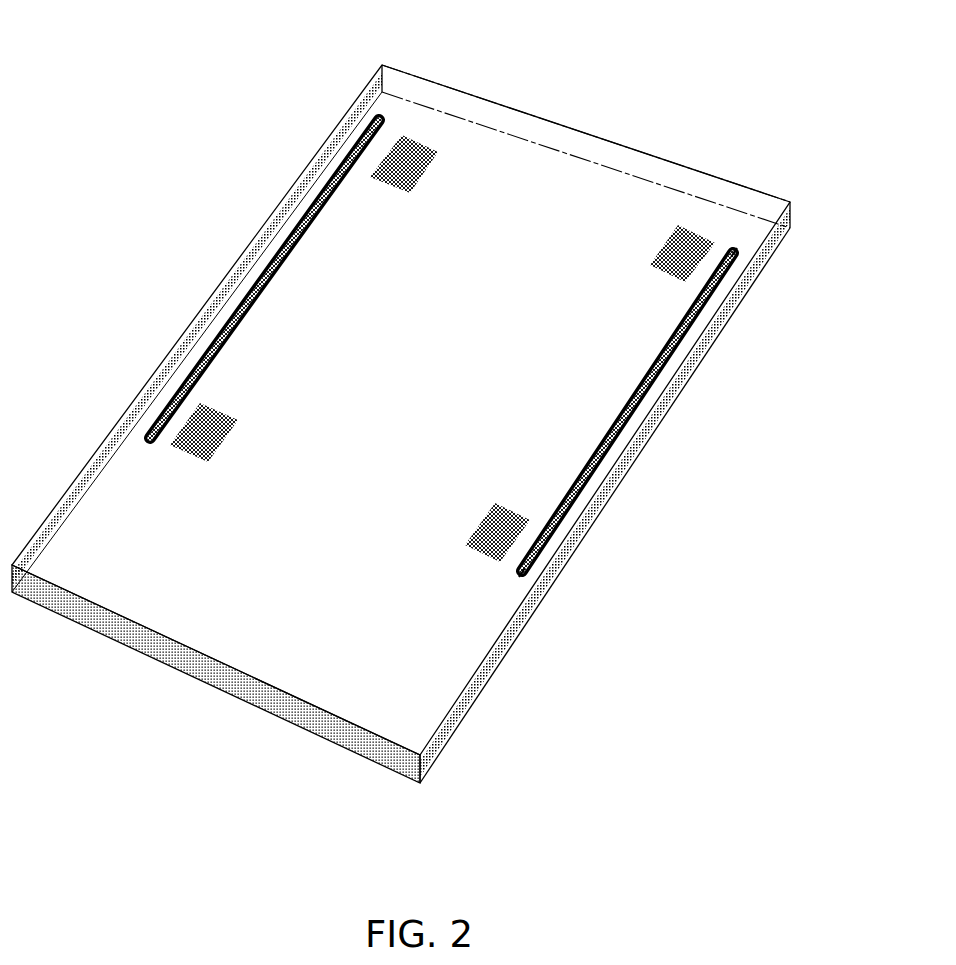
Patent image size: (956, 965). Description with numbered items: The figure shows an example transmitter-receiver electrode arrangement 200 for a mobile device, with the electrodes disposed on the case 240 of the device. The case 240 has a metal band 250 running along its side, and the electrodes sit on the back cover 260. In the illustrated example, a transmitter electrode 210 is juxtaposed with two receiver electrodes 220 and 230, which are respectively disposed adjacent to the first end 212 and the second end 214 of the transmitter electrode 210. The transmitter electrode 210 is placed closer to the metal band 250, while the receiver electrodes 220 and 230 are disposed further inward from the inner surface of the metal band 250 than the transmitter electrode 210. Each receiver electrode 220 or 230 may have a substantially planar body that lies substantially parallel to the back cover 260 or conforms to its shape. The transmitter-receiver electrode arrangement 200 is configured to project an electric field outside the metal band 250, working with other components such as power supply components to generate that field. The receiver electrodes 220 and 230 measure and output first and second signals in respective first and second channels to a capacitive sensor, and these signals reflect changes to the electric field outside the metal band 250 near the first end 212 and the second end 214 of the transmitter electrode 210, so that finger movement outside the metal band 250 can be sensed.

The transmitter-receiver electrode arrangement 200 is at (401, 401).
The transmitter electrode 210 is at (628, 406).
The first end 212 is at (737, 248).
The second end 214 is at (519, 578).
The receiver electrode 220 is at (651, 265).
The receiver electrode 230 is at (466, 544).
The case 240 is at (622, 145).
The metal band 250 is at (604, 508).
The back cover 260 is at (442, 378).